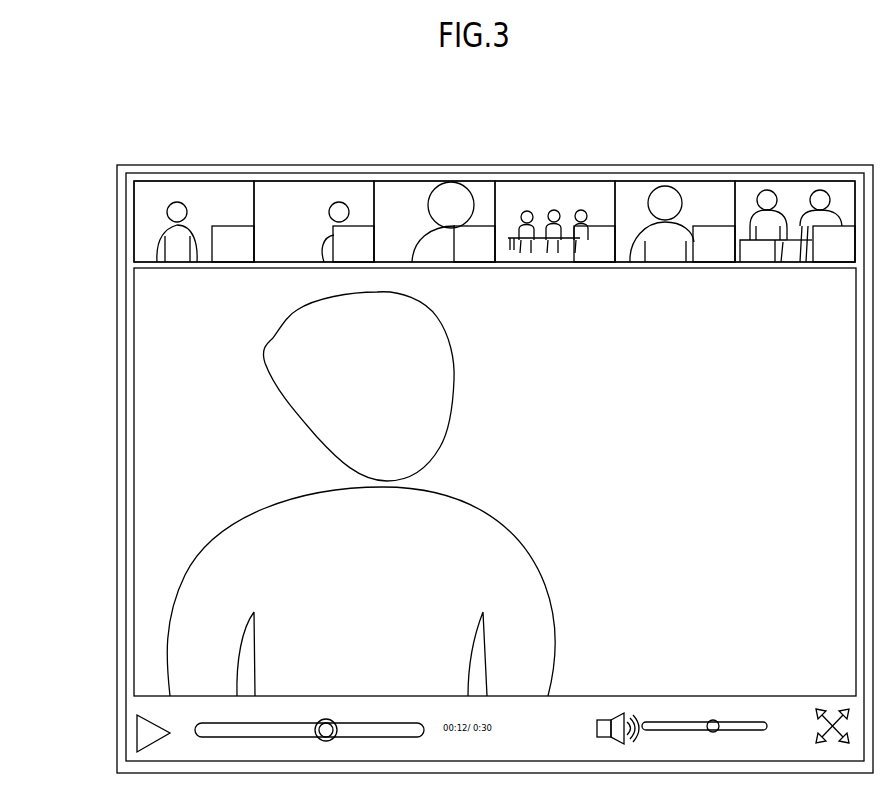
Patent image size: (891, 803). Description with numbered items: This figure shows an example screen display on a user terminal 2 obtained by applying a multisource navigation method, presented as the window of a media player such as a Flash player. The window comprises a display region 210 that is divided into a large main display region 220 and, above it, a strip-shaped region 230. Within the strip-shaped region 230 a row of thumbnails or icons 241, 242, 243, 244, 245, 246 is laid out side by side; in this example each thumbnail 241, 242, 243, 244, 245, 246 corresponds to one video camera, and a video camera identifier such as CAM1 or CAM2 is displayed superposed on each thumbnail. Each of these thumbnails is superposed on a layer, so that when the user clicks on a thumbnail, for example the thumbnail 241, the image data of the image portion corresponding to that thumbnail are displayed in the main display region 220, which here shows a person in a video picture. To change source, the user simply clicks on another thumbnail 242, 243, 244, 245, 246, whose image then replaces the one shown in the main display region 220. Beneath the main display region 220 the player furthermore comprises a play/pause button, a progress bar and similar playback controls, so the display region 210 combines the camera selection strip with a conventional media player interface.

The video conference terminal device 2 is at (117, 442).
The display region 210 is at (126, 352).
The main display region 220 is at (157, 565).
The strip-shaped region 230 is at (134, 242).
The thumbnail 241 is at (165, 195).
The thumbnail 242 is at (280, 195).
The thumbnail 243 is at (400, 195).
The thumbnail 244 is at (518, 195).
The thumbnail 245 is at (633, 193).
The thumbnail 246 is at (757, 193).